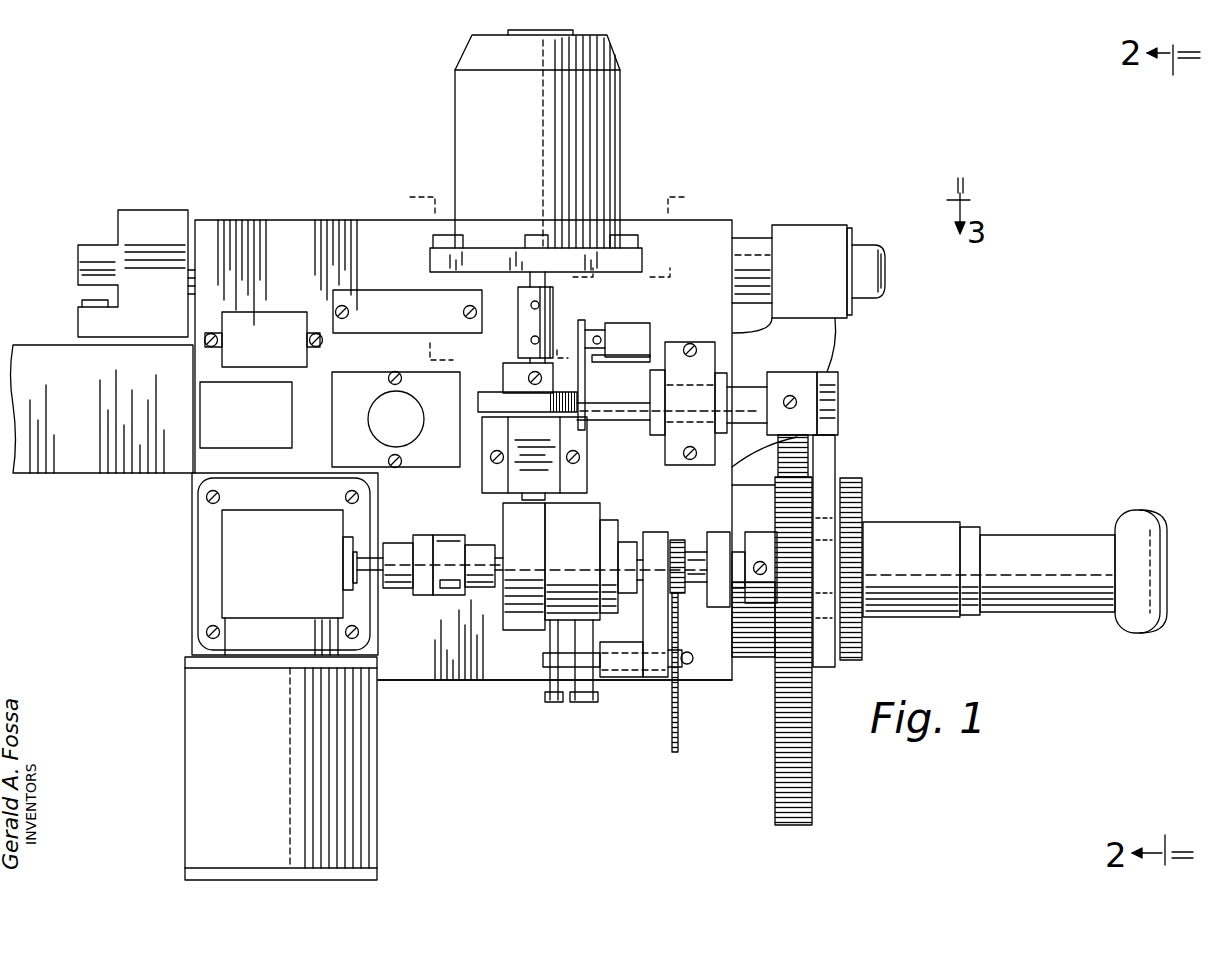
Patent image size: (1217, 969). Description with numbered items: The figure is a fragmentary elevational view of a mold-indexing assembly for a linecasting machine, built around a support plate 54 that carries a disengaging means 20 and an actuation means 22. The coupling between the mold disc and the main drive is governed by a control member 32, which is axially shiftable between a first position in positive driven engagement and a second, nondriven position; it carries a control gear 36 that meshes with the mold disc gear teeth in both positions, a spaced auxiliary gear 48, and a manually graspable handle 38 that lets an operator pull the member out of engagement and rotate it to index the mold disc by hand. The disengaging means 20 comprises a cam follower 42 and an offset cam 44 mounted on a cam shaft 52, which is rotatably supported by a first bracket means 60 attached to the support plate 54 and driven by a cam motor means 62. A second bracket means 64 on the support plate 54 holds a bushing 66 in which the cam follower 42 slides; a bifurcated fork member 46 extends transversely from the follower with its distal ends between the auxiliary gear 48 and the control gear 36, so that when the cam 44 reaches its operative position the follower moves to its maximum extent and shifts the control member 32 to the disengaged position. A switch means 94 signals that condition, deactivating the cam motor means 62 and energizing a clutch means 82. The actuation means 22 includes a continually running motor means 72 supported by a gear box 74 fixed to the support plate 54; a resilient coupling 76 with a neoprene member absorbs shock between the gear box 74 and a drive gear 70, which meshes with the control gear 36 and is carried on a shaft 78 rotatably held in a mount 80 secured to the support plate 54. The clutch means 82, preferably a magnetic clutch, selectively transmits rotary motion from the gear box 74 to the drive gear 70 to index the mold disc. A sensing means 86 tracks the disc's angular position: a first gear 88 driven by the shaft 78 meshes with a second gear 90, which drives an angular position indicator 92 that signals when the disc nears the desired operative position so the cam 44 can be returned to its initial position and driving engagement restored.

The disengaging means 20 is at (657, 321).
The actuation means 22 is at (478, 683).
The control member 32 is at (933, 523).
The control gear 36 is at (818, 482).
The handle 38 is at (1032, 538).
The cam follower 42 is at (620, 422).
The cam 44 is at (480, 398).
The fork member 46 is at (836, 428).
The auxiliary gear 48 is at (862, 500).
The cam shaft 52 is at (520, 361).
The support plate 54 is at (295, 223).
The first bracket means 60 is at (510, 475).
The cam motor means 62 is at (605, 143).
The second bracket means 64 is at (697, 370).
The bushing 66 is at (738, 372).
The drive gear 70 is at (778, 637).
The motor means 72 is at (197, 787).
The gear box 74 is at (233, 582).
The resilient coupling 76 is at (453, 598).
The shaft 78 is at (696, 560).
The mount 80 is at (716, 606).
The clutch means 82 is at (578, 512).
The sensing means 86 is at (626, 679).
The first gear 88 is at (676, 540).
The second gear 90 is at (672, 735).
The angular position indicator 92 is at (567, 670).
The switch means 94 is at (586, 325).